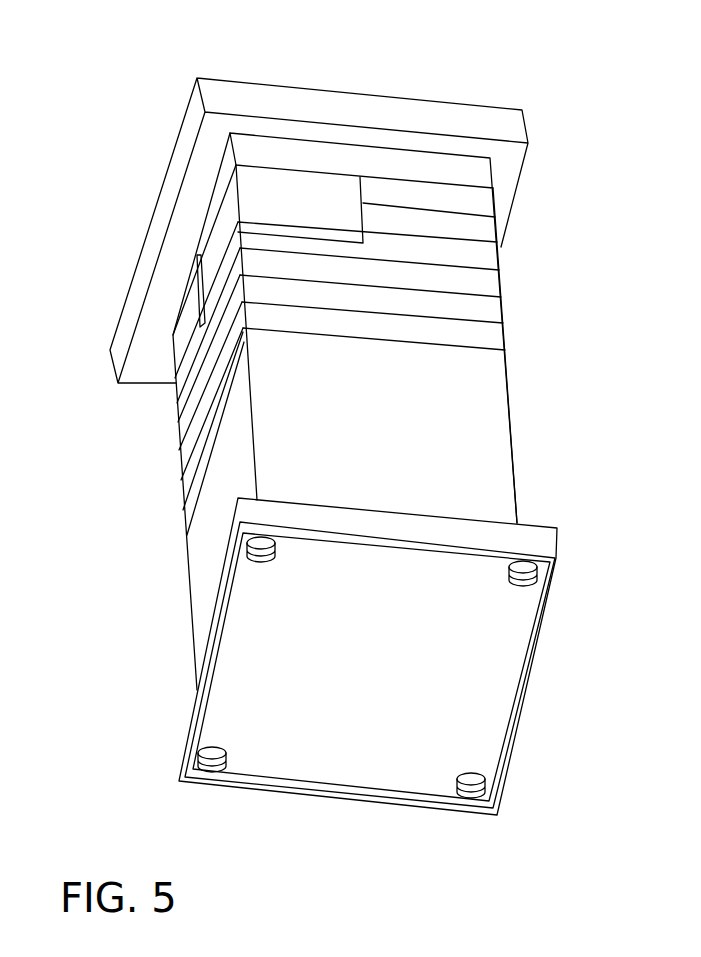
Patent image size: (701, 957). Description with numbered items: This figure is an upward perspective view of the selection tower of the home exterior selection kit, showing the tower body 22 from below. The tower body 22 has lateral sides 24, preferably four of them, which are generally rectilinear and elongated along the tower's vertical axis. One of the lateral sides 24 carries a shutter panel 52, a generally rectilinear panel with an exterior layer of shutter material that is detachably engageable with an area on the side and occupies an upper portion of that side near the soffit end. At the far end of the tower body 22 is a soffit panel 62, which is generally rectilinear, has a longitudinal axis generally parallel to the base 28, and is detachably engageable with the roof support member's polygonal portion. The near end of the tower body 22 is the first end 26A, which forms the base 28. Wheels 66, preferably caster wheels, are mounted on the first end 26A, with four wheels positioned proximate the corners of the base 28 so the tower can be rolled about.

The tower body 22 is at (469, 254).
The lateral sides 24 is at (472, 402).
The first end 26A is at (350, 737).
The base 28 is at (540, 545).
The shutter panels 52 is at (318, 190).
The soffit panels 62 is at (210, 92).
The wheels 66 is at (481, 770).